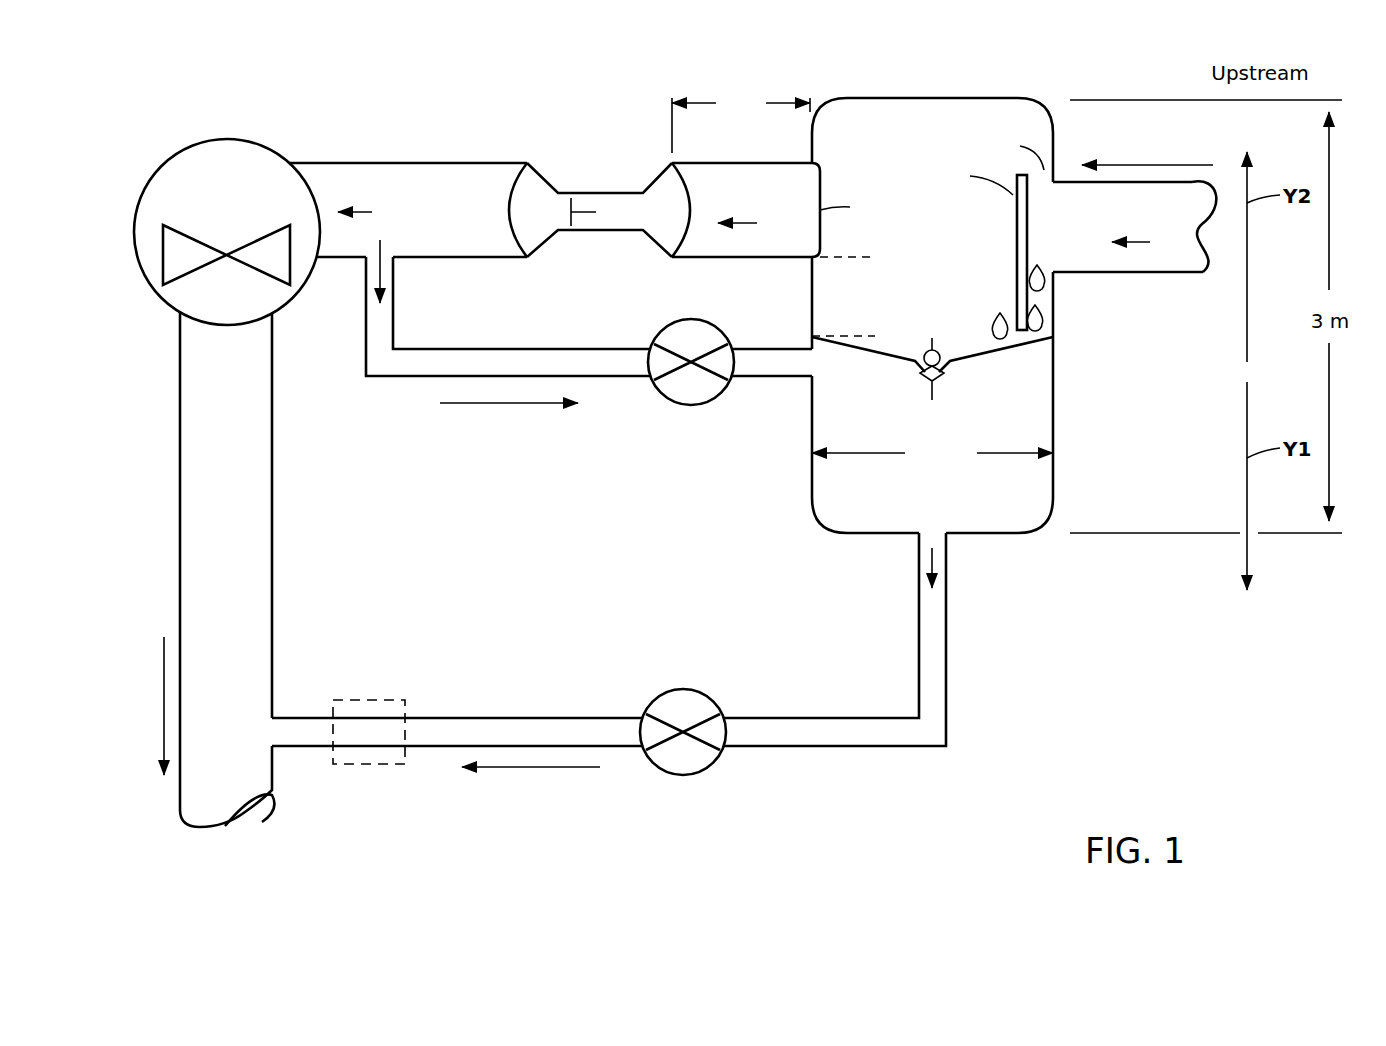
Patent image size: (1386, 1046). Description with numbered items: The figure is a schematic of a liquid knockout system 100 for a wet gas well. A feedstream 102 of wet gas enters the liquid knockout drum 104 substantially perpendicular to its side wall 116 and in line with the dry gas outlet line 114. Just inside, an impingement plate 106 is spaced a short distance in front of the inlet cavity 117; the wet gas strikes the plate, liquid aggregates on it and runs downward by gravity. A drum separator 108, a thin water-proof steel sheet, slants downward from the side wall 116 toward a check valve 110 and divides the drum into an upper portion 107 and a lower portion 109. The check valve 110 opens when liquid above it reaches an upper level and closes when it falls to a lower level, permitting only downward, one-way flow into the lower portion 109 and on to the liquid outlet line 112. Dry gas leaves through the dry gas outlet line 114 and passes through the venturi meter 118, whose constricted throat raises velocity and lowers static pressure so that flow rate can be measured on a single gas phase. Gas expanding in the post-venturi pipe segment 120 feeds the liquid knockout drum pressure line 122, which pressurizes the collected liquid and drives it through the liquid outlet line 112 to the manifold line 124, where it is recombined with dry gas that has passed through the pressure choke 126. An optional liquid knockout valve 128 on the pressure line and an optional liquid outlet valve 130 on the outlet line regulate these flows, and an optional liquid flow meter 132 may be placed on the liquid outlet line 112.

The liquid knockout system 100 is at (1178, 708).
The feedstream 102 is at (1135, 242).
The liquid knockout drum 104 is at (790, 550).
The impingement plate 106 is at (1013, 237).
The upper portion 107 is at (828, 118).
The drum separator 108 is at (990, 351).
The lower portion 109 is at (995, 513).
The check valve 110 is at (930, 371).
The liquid outlet line 112 is at (946, 675).
The dry gas outlet line 114 is at (735, 223).
The side wall 116 is at (1053, 440).
The inlet cavity 117 is at (1056, 228).
The venturi meter 118 is at (545, 170).
The post-venturi pipe segment 120 is at (377, 160).
The liquid knockout drum pressure line 122 is at (408, 378).
The manifold line 124 is at (274, 590).
The pressure choke 126 is at (173, 152).
The liquid knockout valve 128 is at (685, 405).
The liquid outlet valve 130 is at (658, 695).
The liquid flow meter 132 is at (362, 700).